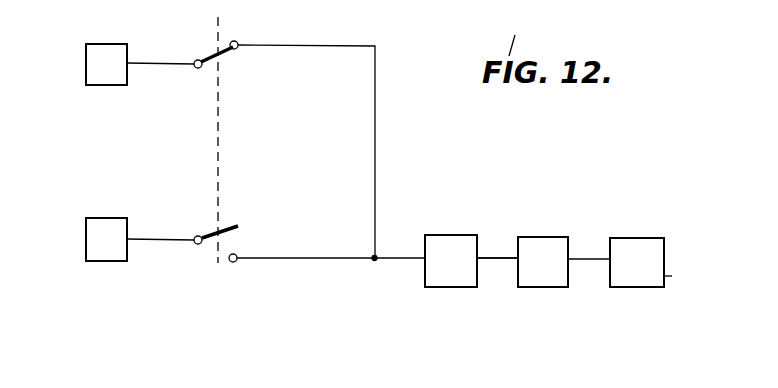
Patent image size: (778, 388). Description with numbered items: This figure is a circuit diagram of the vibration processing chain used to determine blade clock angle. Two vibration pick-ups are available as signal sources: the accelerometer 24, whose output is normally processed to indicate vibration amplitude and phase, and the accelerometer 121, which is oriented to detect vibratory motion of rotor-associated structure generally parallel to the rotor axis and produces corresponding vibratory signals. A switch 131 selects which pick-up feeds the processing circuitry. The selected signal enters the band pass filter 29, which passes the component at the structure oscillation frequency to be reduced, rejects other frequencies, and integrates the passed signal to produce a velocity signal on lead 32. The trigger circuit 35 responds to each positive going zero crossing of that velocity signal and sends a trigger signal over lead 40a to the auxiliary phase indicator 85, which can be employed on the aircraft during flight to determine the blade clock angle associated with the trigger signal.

The accelerometer 24 is at (96, 85).
The accelerometer 121 is at (99, 218).
The selector switch 131 is at (199, 266).
The band pass filter 29 is at (434, 287).
The lead 32 is at (488, 252).
The trigger circuit 35 is at (537, 287).
The lead 40a is at (588, 259).
The phase indicator 85 is at (672, 276).